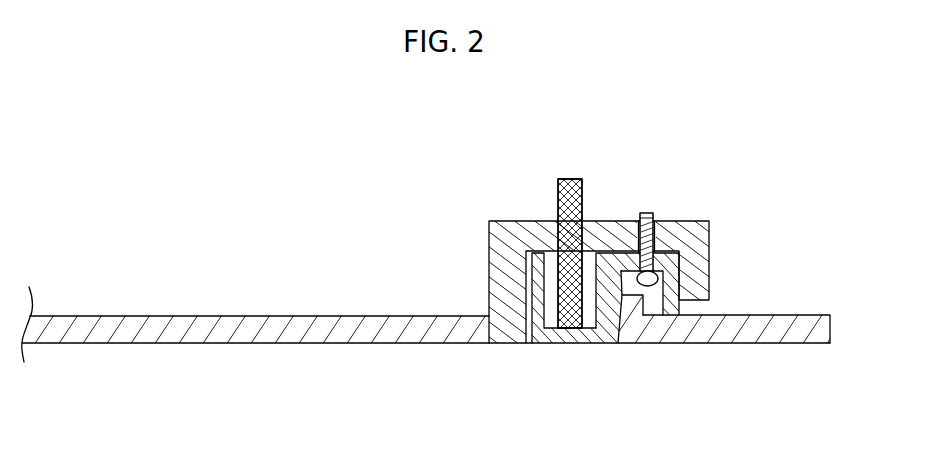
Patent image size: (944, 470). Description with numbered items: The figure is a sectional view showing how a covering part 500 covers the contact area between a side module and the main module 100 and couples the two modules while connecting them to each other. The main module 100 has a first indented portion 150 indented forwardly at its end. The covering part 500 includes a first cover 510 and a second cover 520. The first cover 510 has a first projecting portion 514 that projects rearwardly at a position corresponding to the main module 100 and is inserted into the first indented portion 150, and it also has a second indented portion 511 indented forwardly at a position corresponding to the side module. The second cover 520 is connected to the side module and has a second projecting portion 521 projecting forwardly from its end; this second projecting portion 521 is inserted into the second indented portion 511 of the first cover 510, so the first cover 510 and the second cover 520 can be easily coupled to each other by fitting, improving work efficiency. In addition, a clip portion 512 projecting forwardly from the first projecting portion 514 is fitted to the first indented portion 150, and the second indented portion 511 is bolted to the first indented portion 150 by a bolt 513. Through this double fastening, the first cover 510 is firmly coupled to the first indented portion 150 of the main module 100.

The main module 100 is at (347, 302).
The first indented portion 150 is at (693, 233).
The covering part 500 is at (602, 356).
The first cover 510 is at (550, 345).
The second indented portion 511 is at (629, 278).
The clip portion 512 is at (573, 181).
The bolt 513 is at (649, 212).
The first projecting portion 514 is at (668, 263).
The second cover 520 is at (752, 345).
The second projecting portion 521 is at (633, 307).